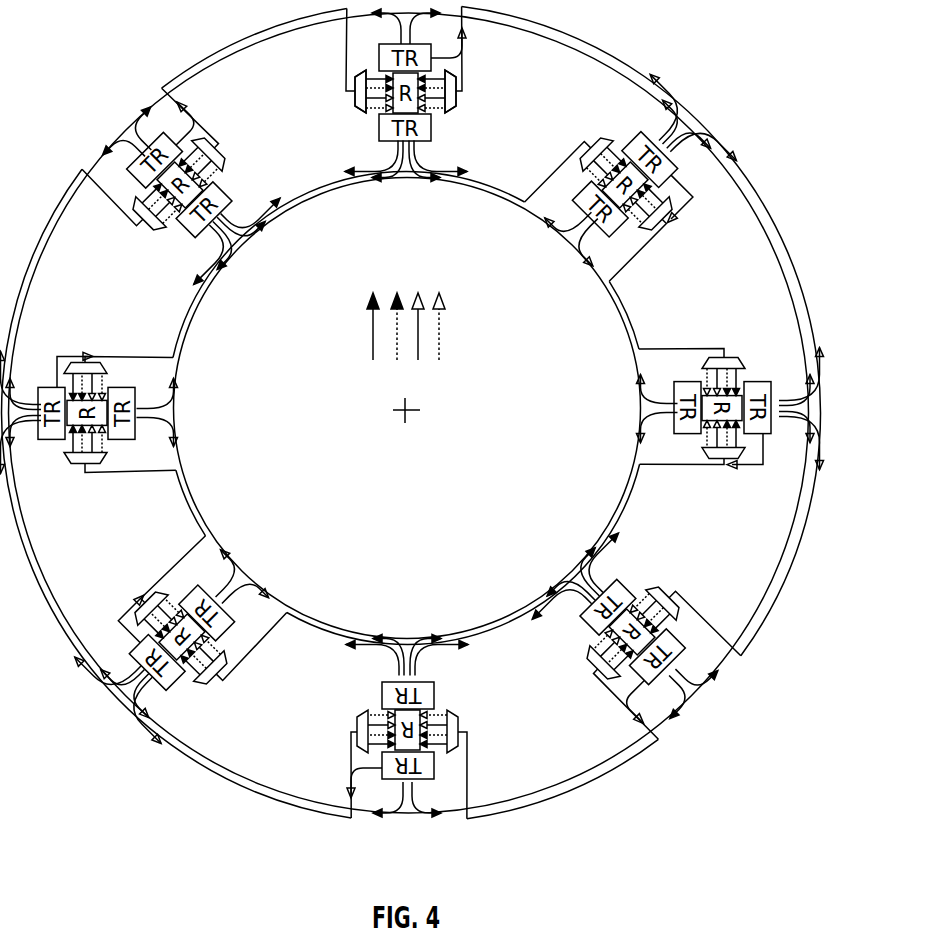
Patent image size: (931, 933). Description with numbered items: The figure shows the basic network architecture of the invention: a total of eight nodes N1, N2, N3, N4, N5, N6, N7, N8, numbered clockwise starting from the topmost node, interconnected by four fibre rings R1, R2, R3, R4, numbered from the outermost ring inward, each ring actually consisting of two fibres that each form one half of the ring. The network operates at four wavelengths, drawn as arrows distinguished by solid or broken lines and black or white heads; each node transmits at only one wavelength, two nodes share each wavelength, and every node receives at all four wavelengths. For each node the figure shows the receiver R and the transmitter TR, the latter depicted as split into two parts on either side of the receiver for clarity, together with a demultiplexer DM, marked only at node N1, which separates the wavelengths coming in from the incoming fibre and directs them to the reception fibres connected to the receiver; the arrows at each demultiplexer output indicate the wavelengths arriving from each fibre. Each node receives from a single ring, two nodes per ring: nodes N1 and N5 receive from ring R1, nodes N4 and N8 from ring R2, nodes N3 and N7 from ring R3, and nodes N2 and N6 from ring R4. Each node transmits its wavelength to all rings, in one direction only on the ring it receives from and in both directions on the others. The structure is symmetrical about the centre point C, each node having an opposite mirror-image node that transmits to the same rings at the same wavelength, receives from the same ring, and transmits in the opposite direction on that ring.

The fibre ring R1 is at (200, 61).
The fibre ring R2 is at (246, 50).
The fibre ring R3 is at (183, 322).
The fibre ring R4 is at (191, 325).
The node N1 is at (406, 111).
The node N2 is at (631, 180).
The node N3 is at (708, 409).
The node N4 is at (633, 633).
The node N5 is at (407, 712).
The node N6 is at (181, 637).
The node N7 is at (106, 412).
The node N8 is at (184, 188).
The demultiplexer DM is at (353, 105).
The centre point C is at (409, 403).